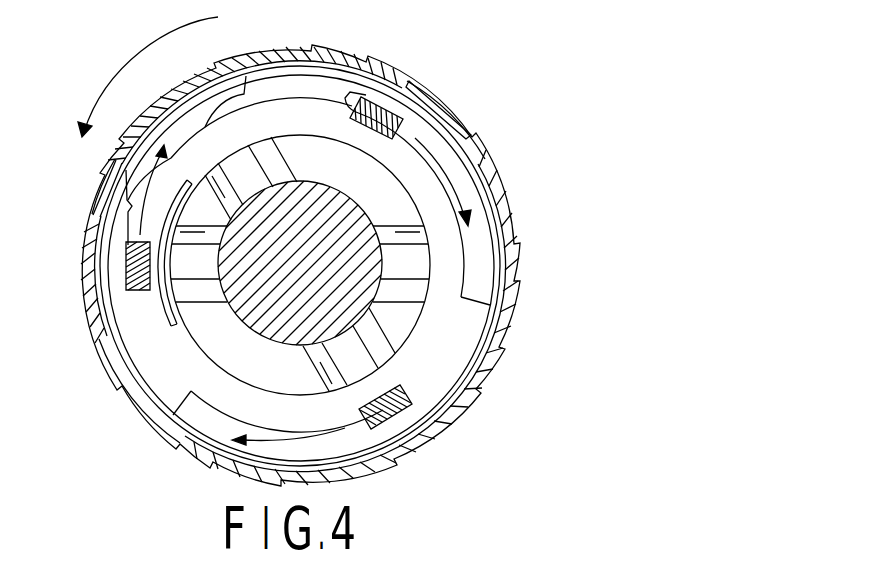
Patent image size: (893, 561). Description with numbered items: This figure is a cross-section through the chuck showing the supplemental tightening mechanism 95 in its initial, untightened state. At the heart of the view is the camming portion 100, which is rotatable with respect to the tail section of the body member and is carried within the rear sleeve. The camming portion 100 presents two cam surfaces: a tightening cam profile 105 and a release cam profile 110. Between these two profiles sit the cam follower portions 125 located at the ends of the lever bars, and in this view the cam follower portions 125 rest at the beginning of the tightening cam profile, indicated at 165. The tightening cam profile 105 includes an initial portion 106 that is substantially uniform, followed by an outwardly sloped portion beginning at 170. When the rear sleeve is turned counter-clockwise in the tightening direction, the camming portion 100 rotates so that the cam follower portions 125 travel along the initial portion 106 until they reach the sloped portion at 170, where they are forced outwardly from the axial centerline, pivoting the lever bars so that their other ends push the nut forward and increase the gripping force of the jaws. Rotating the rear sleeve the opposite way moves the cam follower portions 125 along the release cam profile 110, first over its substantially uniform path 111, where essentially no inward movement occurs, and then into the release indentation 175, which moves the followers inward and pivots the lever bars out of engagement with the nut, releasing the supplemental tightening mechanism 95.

The supplemental tightening mechanism 95 is at (538, 259).
The camming portion 100 is at (470, 170).
The tightening cam profile 105 is at (245, 88).
The initial portion of tightening cam profile 106 is at (160, 322).
The release cam profile 110 is at (234, 60).
The substantially uniform path 111 is at (163, 103).
The cam follower portion 125 is at (370, 113).
The beginning of tightening cam profile 165 is at (345, 103).
The outwardly sloped portion 170 is at (236, 152).
The release indentation 175 is at (455, 113).